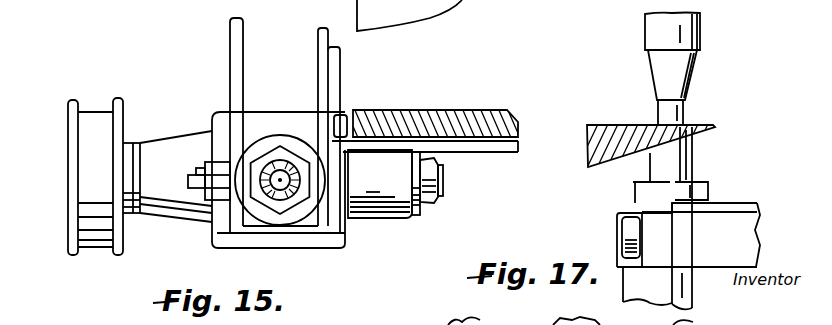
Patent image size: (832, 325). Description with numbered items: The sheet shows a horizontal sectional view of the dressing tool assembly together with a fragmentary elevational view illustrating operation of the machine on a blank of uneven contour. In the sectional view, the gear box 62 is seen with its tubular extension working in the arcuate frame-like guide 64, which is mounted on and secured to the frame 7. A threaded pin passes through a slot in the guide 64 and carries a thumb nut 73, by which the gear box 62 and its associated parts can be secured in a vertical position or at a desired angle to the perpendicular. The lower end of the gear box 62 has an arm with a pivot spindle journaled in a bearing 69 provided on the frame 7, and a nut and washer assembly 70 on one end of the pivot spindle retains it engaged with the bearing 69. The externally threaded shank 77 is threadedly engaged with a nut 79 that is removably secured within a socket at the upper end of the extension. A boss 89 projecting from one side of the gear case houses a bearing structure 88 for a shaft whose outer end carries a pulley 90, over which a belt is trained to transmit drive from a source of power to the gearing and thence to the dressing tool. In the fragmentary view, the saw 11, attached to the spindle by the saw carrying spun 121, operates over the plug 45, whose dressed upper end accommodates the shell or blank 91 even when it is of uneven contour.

In FIG. 15, the frame 7 is at (401, 122).
In FIG. 17, the saw 11 is at (686, 109).
In FIG. 17, the plug 45 is at (694, 155).
In FIG. 15, the gear box 62 is at (346, 241).
In FIG. 15, the arcuate frame-like guide 64 is at (318, 65).
In FIG. 15, the bearing 69 is at (402, 219).
In FIG. 15, the nut and washer assembly 70 is at (446, 173).
In FIG. 15, the thumb nut 73 is at (200, 184).
In FIG. 15, the shank 77 is at (300, 178).
In FIG. 15, the nut 79 is at (273, 152).
In FIG. 15, the bearing structure 88 is at (409, 15).
In FIG. 15, the boss 89 is at (156, 146).
In FIG. 15, the pulley 90 is at (78, 163).
In FIG. 17, the shell or blank 91 is at (614, 125).
In FIG. 17, the saw carrying spun 121 is at (703, 33).